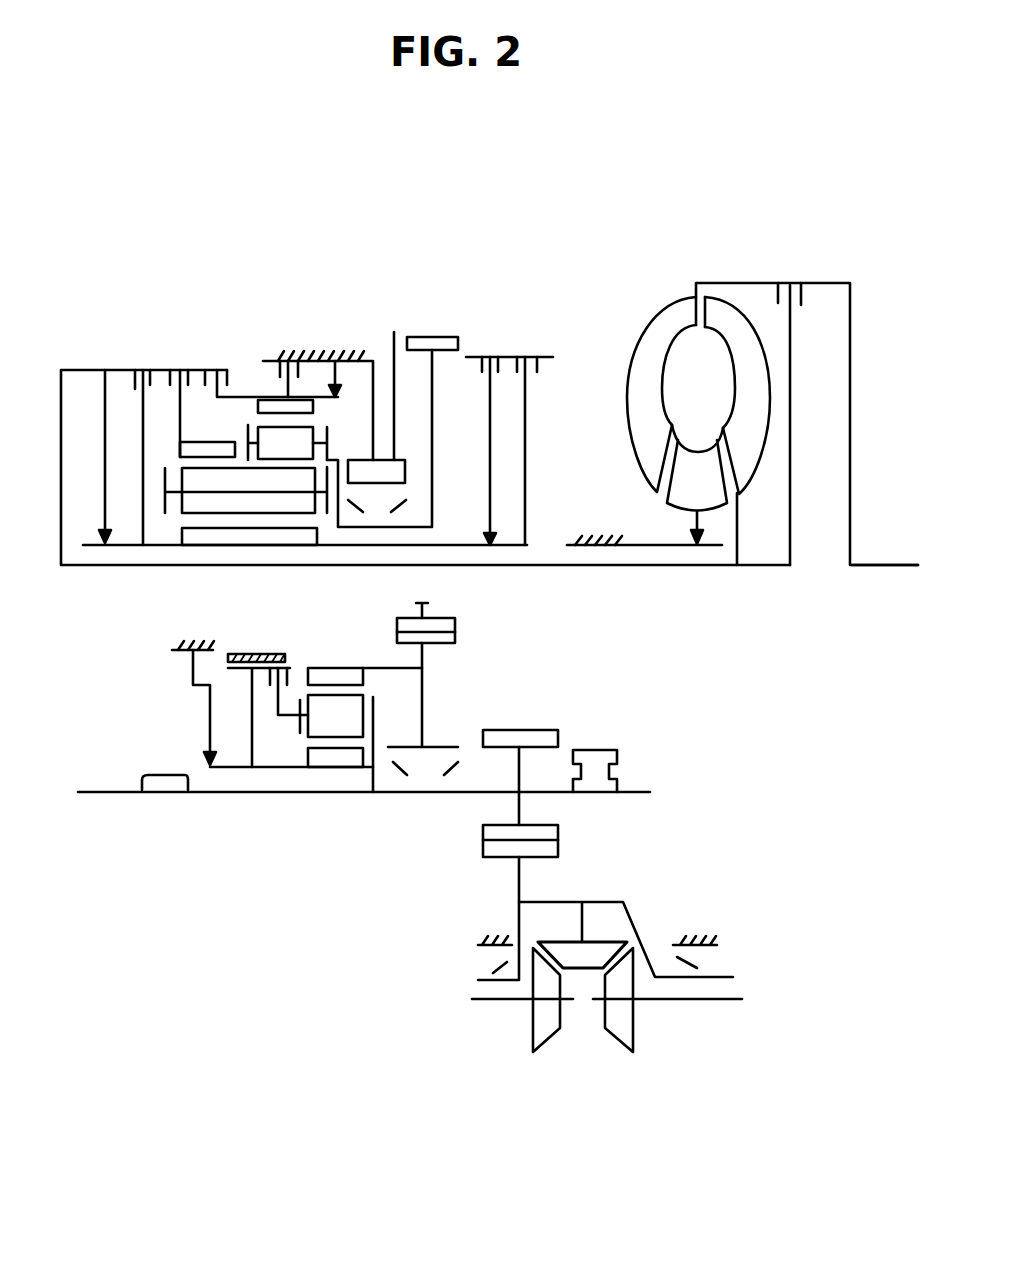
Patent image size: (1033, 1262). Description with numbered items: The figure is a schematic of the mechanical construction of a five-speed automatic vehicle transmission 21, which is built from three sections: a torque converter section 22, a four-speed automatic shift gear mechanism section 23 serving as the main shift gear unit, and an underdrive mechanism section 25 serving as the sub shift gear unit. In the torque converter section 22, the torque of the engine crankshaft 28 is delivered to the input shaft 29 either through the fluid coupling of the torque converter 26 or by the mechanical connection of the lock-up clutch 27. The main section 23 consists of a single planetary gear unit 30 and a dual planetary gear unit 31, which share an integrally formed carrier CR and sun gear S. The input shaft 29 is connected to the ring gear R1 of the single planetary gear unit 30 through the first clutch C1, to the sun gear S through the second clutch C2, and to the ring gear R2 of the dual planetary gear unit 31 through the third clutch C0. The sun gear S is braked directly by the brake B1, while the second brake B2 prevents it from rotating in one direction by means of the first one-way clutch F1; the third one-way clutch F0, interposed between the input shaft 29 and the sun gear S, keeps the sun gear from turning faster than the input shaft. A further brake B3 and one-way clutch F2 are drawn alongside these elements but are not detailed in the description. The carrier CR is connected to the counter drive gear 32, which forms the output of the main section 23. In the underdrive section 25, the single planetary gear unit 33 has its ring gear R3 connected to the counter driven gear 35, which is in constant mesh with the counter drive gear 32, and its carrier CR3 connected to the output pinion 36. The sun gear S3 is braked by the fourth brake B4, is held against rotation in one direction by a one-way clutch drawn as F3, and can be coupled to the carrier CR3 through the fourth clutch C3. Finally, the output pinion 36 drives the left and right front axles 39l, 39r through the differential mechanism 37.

The five-speed automatic transmission 21 is at (150, 262).
The torque converter section 22 is at (742, 403).
The four-speed automatic shift gear mechanism section 23 is at (290, 405).
The underdrive mechanism section 25 is at (410, 835).
The torque converter 26 is at (663, 330).
The lock-up clutch 27 is at (803, 307).
The engine crankshaft 28 is at (882, 563).
The input shaft 29 is at (690, 567).
The single planetary gear unit 30 is at (237, 441).
The dual planetary gear unit 31 is at (322, 393).
The counter drive gear 32 is at (403, 382).
The single planetary gear unit 33 is at (389, 716).
The counter driven gear 35 is at (455, 645).
The output pinion 36 is at (532, 733).
The differential mechanism 37 is at (636, 905).
The left front axle 39l is at (488, 1000).
The right front axle 39r is at (705, 1000).
The third clutch C0 is at (218, 363).
The first clutch C1 is at (179, 399).
The second clutch C2 is at (137, 443).
The fourth clutch C3 is at (290, 657).
The brake B1 is at (532, 436).
The second brake B2 is at (509, 350).
The brake B3 is at (318, 391).
The fourth brake B4 is at (259, 696).
The third one-way clutch F0 is at (114, 456).
The first one-way clutch F1 is at (478, 451).
The one-way clutch F2 is at (342, 359).
The one-way clutch F3 is at (272, 704).
The ring gear R1 is at (205, 443).
The ring gear R2 is at (303, 402).
The ring gear R3 is at (348, 672).
The sun gear S is at (230, 537).
The sun gear S3 is at (337, 760).
The carrier CR is at (379, 438).
The carrier CR3 is at (385, 727).